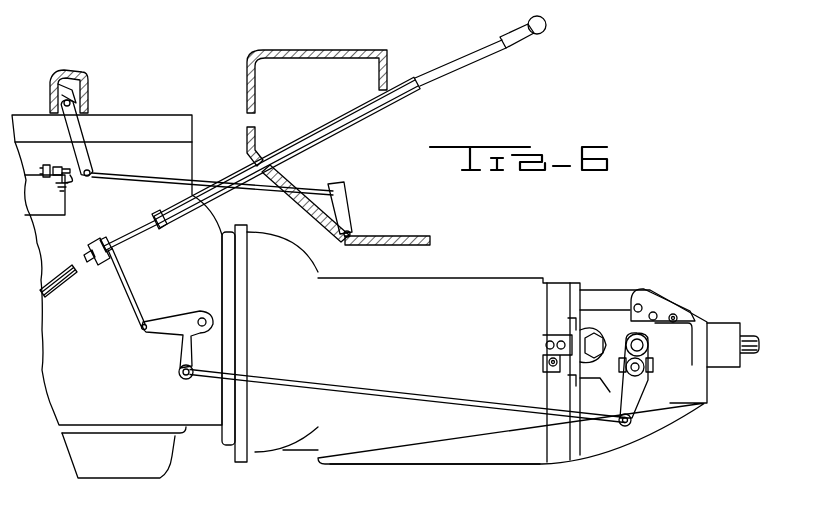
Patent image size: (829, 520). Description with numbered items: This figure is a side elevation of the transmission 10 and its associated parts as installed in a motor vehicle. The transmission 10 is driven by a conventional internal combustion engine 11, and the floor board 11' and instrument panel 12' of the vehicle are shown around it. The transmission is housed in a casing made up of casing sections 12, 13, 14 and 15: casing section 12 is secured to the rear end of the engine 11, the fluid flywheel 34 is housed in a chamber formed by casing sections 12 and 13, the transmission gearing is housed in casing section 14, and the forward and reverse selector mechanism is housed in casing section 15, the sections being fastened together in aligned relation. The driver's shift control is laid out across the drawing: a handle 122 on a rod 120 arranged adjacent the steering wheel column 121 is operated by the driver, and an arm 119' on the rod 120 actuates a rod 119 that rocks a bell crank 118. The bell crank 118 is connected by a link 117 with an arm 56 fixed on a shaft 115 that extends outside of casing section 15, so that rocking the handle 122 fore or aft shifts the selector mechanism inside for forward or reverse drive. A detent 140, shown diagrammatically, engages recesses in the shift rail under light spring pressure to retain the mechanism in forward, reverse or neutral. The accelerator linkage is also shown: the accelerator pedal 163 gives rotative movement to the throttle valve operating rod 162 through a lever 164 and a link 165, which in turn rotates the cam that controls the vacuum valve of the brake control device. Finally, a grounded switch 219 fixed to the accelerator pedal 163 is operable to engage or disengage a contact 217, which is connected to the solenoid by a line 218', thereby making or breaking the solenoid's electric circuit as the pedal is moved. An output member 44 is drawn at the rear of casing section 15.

The transmission 10 is at (431, 278).
The internal combustion engine 11 is at (117, 296).
The floor board 11' is at (346, 205).
The casing section 12 is at (216, 349).
The instrument panel 12' is at (333, 101).
The casing section 13 is at (250, 462).
The casing section 14 is at (380, 466).
The casing section 15 is at (642, 292).
The fluid flywheel 34 is at (276, 454).
The output shaft 44 is at (750, 336).
The arm 56 is at (634, 418).
The shaft 115 is at (650, 374).
The link 117 is at (438, 399).
The bell crank 118 is at (184, 320).
The rod 119 is at (135, 287).
The arm 119' is at (131, 230).
The rod 120 is at (125, 257).
The steering wheel column 121 is at (376, 115).
The handle 122 is at (546, 36).
The detent 140 is at (634, 334).
The throttle valve operating rod 162 is at (82, 92).
The accelerator pedal 163 is at (346, 208).
The lever 164 is at (94, 157).
The link 165 is at (165, 180).
The contact 217 is at (47, 165).
The line 218' is at (47, 205).
The grounded switch 219 is at (66, 185).